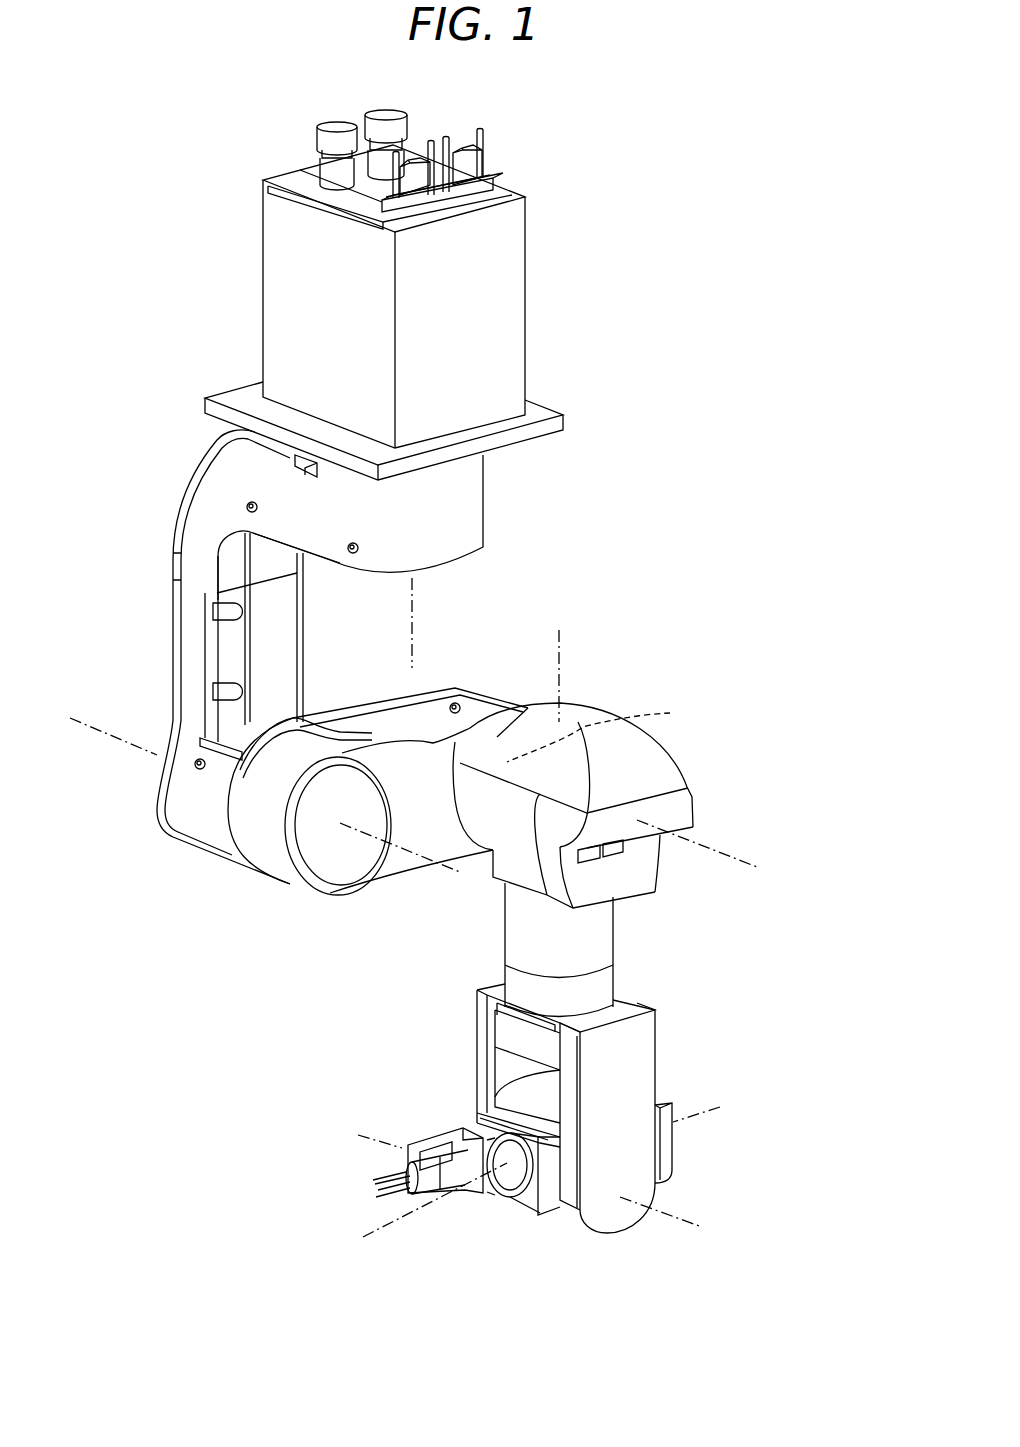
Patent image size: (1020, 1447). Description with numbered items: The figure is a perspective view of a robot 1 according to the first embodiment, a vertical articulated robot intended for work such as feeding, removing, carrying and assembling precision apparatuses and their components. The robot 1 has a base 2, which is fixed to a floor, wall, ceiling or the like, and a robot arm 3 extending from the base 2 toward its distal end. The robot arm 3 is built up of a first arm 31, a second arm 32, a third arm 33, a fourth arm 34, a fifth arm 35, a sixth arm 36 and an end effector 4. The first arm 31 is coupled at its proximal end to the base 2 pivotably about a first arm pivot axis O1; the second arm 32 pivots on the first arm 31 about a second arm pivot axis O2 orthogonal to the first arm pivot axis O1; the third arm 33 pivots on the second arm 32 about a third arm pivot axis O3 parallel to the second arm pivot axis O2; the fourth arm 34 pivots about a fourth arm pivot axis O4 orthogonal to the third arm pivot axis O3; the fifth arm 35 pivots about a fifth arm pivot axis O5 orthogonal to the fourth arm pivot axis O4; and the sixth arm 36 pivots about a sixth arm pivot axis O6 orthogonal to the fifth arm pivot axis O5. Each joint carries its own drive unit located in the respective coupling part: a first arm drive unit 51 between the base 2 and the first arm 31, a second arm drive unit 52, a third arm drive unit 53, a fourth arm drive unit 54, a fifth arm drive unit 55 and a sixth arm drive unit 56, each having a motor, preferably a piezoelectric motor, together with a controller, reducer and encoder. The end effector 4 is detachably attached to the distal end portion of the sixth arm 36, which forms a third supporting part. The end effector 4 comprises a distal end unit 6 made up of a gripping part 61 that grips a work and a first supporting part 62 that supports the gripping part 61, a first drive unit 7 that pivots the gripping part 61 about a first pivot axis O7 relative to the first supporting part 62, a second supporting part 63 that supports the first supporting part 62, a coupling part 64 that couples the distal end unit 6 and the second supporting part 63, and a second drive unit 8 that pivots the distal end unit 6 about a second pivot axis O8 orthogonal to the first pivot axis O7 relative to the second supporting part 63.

The robot 1 is at (597, 138).
The base 2 is at (527, 292).
The robot arm 3 is at (175, 508).
The first arm 31 is at (402, 491).
The second arm 32 is at (490, 684).
The third arm 33 is at (606, 804).
The fourth arm 34 is at (660, 1047).
The fifth arm 35 is at (675, 1145).
The sixth arm 36 is at (538, 1209).
The end effector 4 is at (438, 1192).
The first arm drive unit 51 is at (445, 498).
The second arm drive unit 52 is at (262, 823).
The third arm drive unit 53 is at (670, 713).
The fourth arm drive unit 54 is at (557, 915).
The fifth arm drive unit 55 is at (567, 997).
The sixth arm drive unit 56 is at (608, 1183).
The distal end unit 6 is at (454, 1248).
The gripping part 61 is at (438, 1195).
The first supporting part 62 is at (452, 1190).
The second supporting part 63 is at (503, 1180).
The coupling part 64 is at (417, 1142).
The first drive unit 7 is at (450, 1128).
The second drive unit 8 is at (405, 1160).
The first arm pivot axis O1 is at (412, 603).
The second arm pivot axis O2 is at (93, 722).
The third arm pivot axis O3 is at (733, 850).
The fourth arm pivot axis O4 is at (562, 648).
The fifth arm pivot axis O5 is at (675, 1218).
The sixth arm pivot axis O6 is at (720, 1107).
The first pivot axis O7 is at (368, 1237).
The second pivot axis O8 is at (385, 1132).